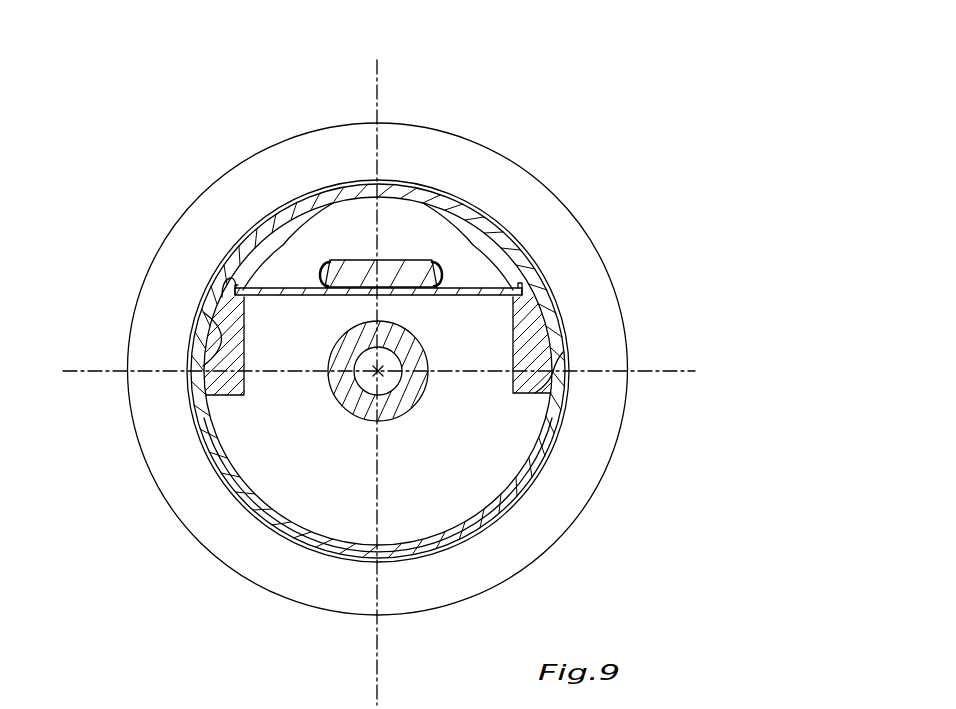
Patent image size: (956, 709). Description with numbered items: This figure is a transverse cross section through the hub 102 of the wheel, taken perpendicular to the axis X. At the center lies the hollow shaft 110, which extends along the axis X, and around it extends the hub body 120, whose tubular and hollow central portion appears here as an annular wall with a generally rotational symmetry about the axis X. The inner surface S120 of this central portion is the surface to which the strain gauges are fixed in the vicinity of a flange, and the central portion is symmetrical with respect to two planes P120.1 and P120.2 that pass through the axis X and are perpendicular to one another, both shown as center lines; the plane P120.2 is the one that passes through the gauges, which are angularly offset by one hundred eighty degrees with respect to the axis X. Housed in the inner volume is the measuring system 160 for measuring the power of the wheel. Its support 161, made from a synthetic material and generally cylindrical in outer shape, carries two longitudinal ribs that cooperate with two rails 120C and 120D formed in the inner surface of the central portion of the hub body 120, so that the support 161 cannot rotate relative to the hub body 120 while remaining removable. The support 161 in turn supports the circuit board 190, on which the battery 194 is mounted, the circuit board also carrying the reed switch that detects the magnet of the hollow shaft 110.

The sensor assembly 102 is at (185, 110).
The hollow shaft 110 is at (352, 393).
The hub body 120 is at (527, 493).
The rail 120C is at (567, 420).
The rail 120D is at (195, 360).
The measuring system 160 is at (423, 245).
The support 161 is at (533, 328).
The circuit board 190 is at (483, 288).
The battery 194 is at (350, 268).
The inner surface S120 is at (311, 520).
The plane P120.1 is at (362, 357).
The plane P120.2 is at (407, 378).
The axis X is at (382, 372).